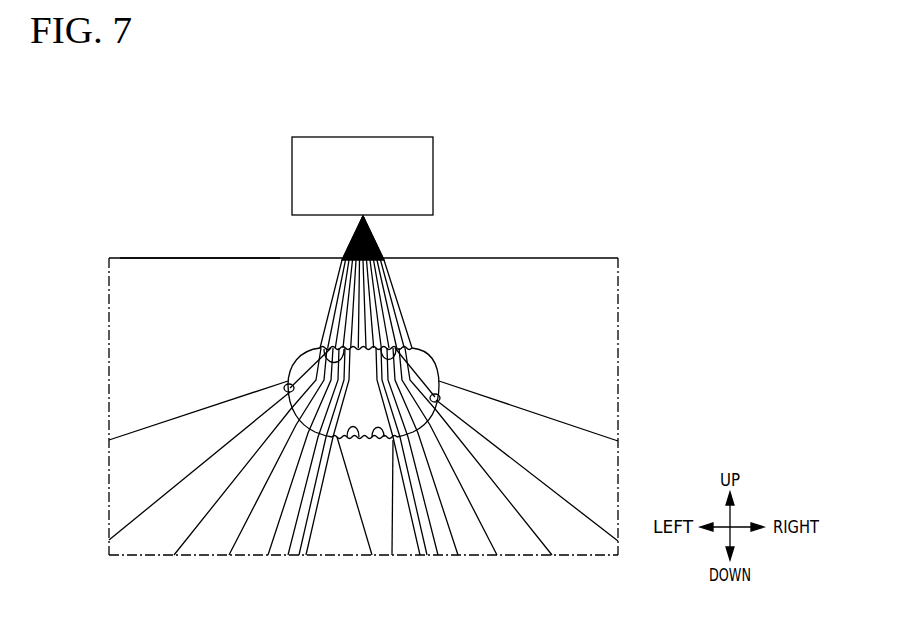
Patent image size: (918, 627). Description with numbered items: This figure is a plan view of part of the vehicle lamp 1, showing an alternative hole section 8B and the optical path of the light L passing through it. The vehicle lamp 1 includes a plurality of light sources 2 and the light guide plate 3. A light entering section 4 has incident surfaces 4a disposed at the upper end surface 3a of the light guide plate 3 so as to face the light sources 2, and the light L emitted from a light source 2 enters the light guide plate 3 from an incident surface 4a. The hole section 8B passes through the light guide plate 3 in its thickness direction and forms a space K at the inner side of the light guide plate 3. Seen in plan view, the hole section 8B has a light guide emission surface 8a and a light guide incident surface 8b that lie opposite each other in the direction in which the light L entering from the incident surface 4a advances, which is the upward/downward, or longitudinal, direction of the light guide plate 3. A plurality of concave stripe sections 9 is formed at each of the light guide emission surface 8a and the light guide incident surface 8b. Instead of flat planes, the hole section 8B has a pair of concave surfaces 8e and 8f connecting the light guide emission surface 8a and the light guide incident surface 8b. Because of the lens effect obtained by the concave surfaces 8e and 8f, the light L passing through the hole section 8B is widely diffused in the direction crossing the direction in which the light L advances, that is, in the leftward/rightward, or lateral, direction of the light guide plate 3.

The vehicle lamp 1 is at (580, 160).
The light source 2 is at (433, 175).
The light guide plate 3 is at (96, 331).
The upper end surface 3a is at (166, 258).
The light entering section 4 is at (415, 238).
The incident surface 4a is at (376, 248).
The hole section 8B is at (289, 354).
The light guide emission surface 8a is at (393, 350).
The light guide incident surface 8b is at (379, 440).
The concave surface 8e is at (284, 387).
The concave surface 8f is at (440, 401).
The concave stripe section 9 is at (322, 350).
The space K is at (423, 379).
The light L is at (353, 235).